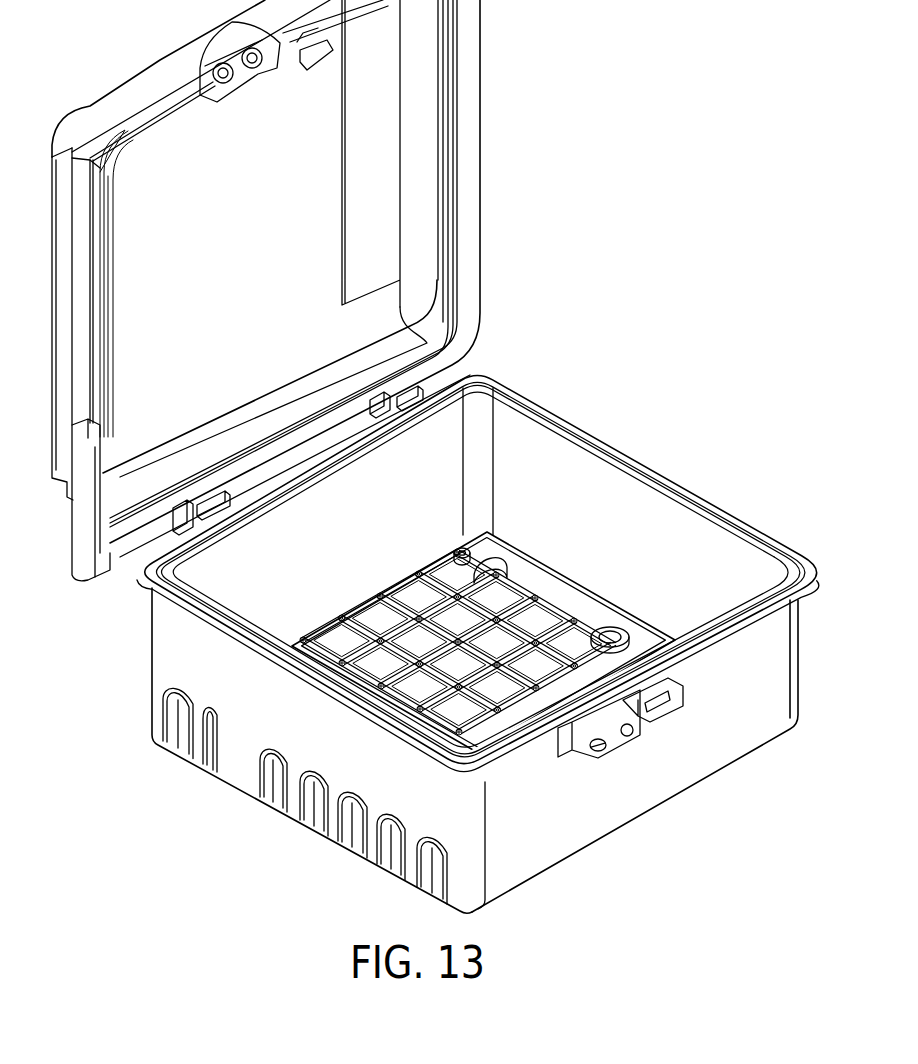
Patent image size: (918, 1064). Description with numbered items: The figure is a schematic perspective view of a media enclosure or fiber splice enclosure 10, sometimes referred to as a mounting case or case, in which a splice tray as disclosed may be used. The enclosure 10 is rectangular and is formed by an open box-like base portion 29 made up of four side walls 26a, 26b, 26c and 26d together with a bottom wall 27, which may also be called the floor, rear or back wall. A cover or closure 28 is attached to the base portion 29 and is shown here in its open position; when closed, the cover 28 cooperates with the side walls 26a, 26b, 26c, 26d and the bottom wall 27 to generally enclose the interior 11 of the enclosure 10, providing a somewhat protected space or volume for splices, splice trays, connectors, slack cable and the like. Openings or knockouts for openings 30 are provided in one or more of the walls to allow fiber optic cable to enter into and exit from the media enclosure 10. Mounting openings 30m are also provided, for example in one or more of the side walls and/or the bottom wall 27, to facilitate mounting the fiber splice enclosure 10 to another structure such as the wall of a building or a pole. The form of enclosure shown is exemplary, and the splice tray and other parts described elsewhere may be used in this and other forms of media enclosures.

The fiber splice enclosure 10 is at (420, 456).
The interior 11 is at (536, 485).
The side wall 26a is at (232, 570).
The side wall 26b is at (676, 520).
The side wall 26c is at (705, 606).
The side wall 26d is at (248, 612).
The bottom wall 27 is at (499, 659).
The cover 28 is at (44, 366).
The base portion 29 is at (423, 645).
The openings 30 is at (392, 847).
The mounting openings 30m is at (612, 630).